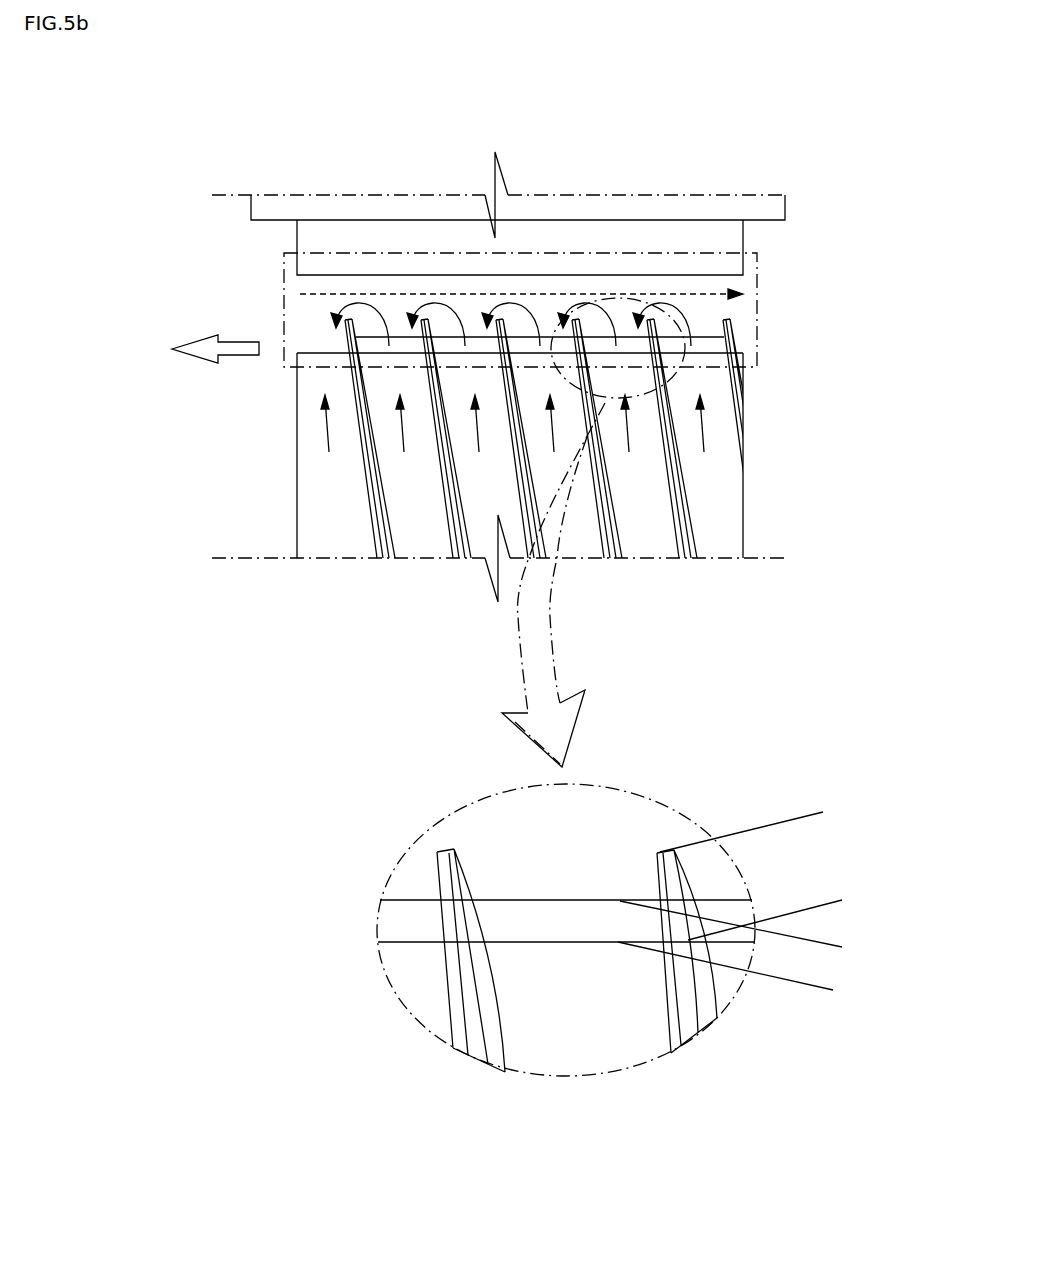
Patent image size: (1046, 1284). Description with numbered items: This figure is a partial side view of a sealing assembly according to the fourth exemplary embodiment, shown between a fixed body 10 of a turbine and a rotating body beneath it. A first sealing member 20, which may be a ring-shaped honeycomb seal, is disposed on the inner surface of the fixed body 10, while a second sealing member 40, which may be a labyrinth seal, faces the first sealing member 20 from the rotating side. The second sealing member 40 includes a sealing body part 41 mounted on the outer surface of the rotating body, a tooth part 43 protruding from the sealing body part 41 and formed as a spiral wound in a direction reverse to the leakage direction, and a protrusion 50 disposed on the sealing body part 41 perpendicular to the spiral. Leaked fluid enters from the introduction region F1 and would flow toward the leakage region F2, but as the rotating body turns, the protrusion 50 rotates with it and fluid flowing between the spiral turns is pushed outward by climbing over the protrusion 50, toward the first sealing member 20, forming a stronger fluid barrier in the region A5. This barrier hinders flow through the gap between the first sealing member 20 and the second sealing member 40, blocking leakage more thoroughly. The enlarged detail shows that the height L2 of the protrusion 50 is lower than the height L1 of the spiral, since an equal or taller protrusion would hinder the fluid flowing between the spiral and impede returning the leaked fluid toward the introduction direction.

The fixed body 10 is at (523, 210).
The first sealing member 20 is at (588, 263).
The second sealing member 40 is at (818, 453).
The sealing body part 41 is at (717, 523).
The tooth part 43 is at (670, 450).
The protrusion 50 is at (387, 355).
The fluid barrier region A5 is at (757, 300).
The introduction region F1 is at (183, 350).
The leakage region F2 is at (860, 348).
The height of spiral L1 is at (822, 813).
The height of protrusion L2 is at (834, 949).